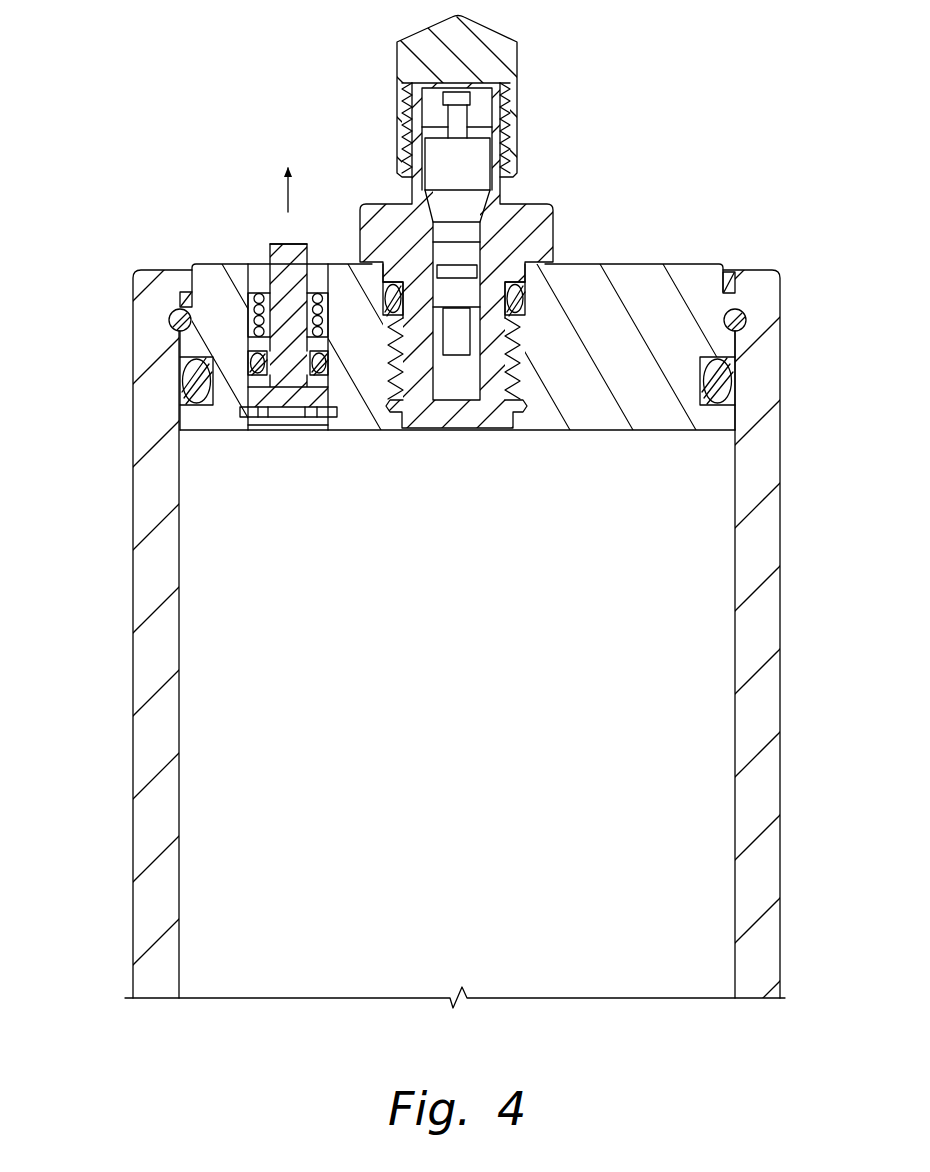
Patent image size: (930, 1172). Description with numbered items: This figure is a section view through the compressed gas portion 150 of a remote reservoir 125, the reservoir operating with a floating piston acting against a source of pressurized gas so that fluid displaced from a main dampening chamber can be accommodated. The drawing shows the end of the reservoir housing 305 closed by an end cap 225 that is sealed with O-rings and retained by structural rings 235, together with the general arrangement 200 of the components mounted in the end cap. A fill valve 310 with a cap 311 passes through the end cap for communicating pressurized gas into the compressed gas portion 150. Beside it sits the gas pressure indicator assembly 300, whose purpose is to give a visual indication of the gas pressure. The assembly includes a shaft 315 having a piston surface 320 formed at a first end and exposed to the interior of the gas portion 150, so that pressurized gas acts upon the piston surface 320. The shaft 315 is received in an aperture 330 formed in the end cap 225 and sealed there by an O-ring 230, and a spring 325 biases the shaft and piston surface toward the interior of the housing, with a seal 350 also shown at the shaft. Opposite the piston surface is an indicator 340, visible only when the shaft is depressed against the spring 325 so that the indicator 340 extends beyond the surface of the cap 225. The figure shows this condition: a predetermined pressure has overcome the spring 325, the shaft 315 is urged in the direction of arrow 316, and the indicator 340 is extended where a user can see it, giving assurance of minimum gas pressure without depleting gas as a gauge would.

The remote reservoir 125 is at (108, 643).
The compressed gas portion 150 is at (212, 831).
The lid assembly 200 is at (735, 105).
The end cap 225 is at (641, 263).
The O-ring 230 is at (188, 381).
The structural rings 235 is at (168, 318).
The gas pressure indicator assembly 300 is at (230, 212).
The reservoir housing 305 is at (160, 486).
The fill valve 310 is at (535, 138).
The cap 311 is at (520, 52).
The shaft 315 is at (272, 250).
The arrow 316 is at (290, 192).
The piston surface 320 is at (296, 392).
The spring 325 is at (323, 296).
The aperture 330 is at (252, 394).
The indicator 340 is at (283, 245).
The seal 350 is at (330, 373).